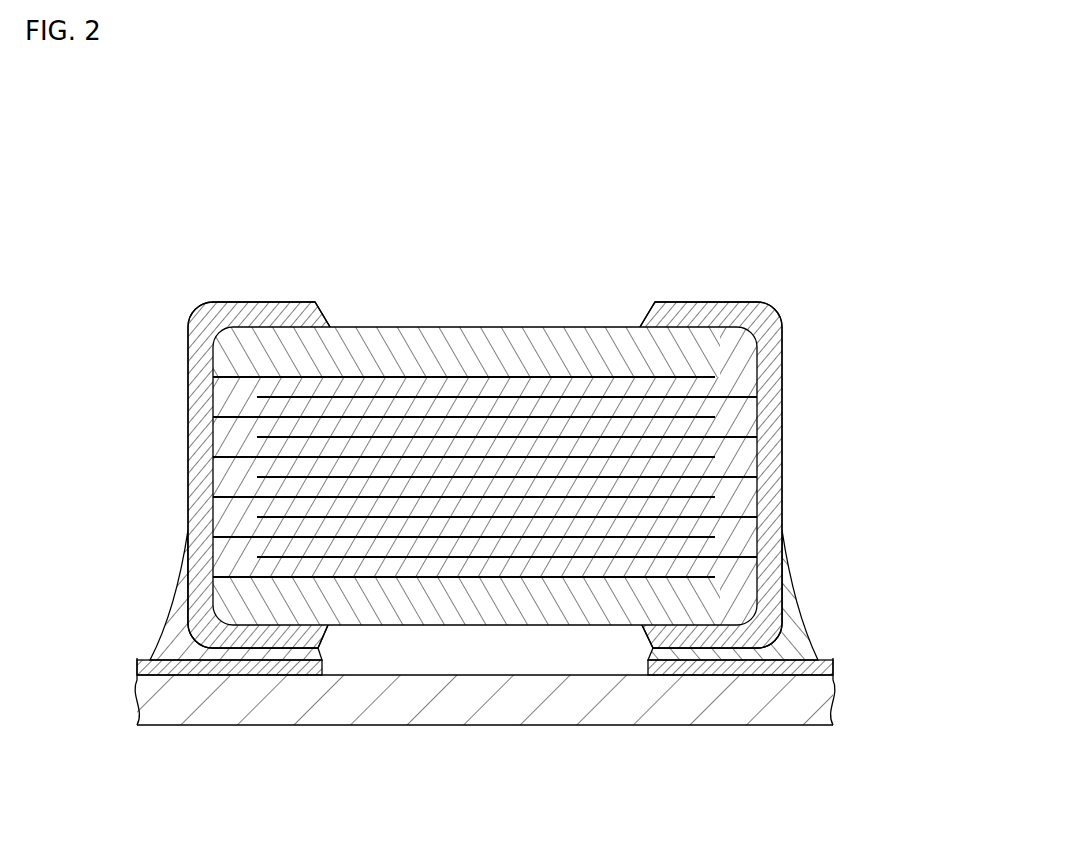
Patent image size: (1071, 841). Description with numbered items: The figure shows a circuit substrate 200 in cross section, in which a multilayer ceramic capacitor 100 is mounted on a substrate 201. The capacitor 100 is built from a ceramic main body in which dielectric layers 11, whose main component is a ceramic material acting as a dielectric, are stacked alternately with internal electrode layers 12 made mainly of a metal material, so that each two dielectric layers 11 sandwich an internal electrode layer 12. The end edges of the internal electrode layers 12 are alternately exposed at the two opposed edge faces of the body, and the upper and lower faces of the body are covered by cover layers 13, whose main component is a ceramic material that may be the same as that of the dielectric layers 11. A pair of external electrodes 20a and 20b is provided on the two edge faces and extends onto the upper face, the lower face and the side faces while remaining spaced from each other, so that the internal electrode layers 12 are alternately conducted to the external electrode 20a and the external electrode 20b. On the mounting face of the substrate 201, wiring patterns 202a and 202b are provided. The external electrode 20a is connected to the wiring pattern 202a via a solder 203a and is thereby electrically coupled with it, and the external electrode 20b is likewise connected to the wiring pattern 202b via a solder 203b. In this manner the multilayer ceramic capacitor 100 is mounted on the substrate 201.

The circuit substrate 200 is at (848, 100).
The multilayer ceramic capacitor 100 is at (478, 398).
The external electrode 20a is at (212, 301).
The external electrode 20b is at (750, 301).
The cover layer 13 is at (485, 420).
The internal electrode layer 12 is at (443, 418).
The dielectric layer 11 is at (563, 407).
The substrate 201 is at (632, 718).
The wiring pattern 202a is at (138, 660).
The wiring pattern 202b is at (836, 661).
The solder 203a is at (168, 632).
The solder 203b is at (802, 632).